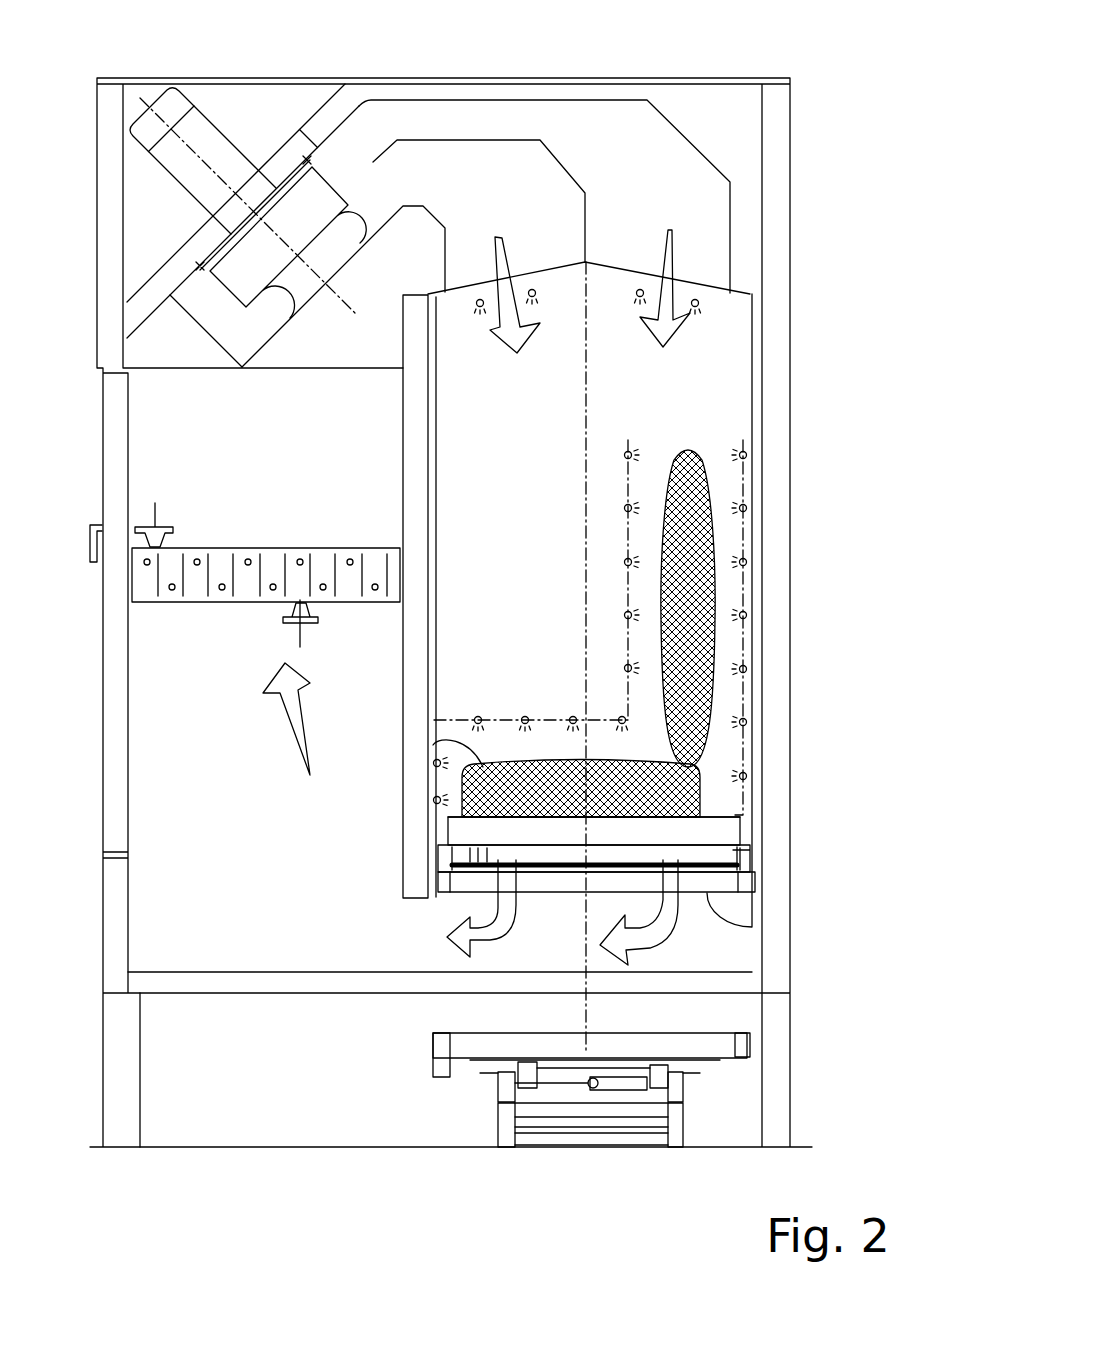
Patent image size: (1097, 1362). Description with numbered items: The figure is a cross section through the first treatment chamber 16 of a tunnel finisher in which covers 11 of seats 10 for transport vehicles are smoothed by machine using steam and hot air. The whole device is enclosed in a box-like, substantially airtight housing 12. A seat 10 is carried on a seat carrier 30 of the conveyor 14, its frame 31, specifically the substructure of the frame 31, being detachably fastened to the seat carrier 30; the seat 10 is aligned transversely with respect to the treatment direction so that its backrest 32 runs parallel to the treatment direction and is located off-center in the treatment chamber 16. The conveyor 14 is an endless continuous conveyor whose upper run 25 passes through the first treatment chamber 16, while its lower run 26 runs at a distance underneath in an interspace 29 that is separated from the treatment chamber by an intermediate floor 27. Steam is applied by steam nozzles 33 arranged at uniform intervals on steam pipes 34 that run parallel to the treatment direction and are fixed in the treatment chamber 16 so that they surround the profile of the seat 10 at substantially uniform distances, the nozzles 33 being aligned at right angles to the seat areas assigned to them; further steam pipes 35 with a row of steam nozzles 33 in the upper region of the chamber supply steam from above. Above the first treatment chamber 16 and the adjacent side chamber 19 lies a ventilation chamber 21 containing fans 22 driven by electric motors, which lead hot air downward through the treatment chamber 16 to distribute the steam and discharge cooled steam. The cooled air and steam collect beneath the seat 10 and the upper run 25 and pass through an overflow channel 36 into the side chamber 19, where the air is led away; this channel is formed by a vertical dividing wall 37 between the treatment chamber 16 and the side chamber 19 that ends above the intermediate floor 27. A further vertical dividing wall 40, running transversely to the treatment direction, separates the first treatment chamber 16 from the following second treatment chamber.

The seat 10 is at (732, 765).
The cover 11 is at (715, 610).
The housing 12 is at (793, 393).
The conveyor 14 is at (758, 927).
The first treatment chamber 16 is at (657, 400).
The side chamber 19 is at (194, 733).
The ventilation chamber 21 is at (480, 200).
The fan 22 is at (313, 207).
The upper run 25 is at (715, 857).
The lower run 26 is at (467, 1047).
The intermediate floor 27 is at (360, 985).
The interspace 29 is at (197, 1075).
The seat carrier 30 is at (707, 832).
The frame 31 is at (513, 823).
The backrest 32 is at (715, 552).
The steam nozzle 33 is at (743, 457).
The steam pipe 34 is at (628, 455).
The further steam pipe 35 is at (533, 292).
The overflow channel 36 is at (418, 938).
The dividing wall 37 is at (417, 423).
The dividing wall 40 is at (500, 555).